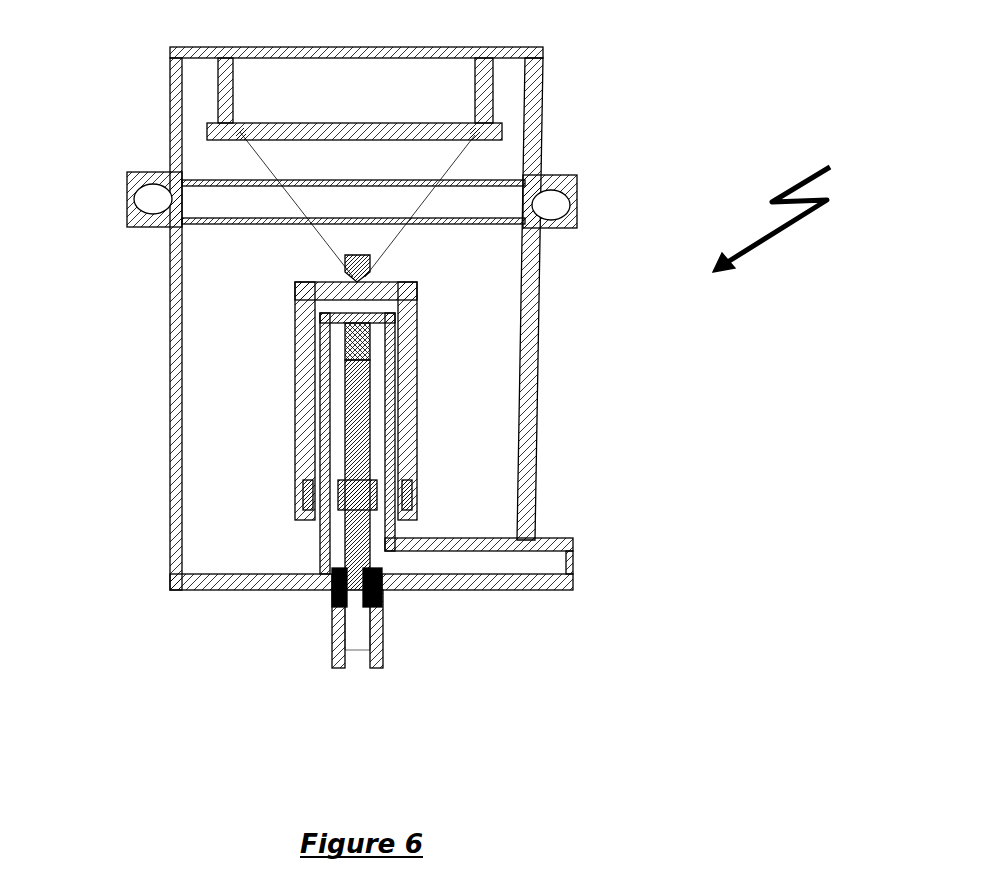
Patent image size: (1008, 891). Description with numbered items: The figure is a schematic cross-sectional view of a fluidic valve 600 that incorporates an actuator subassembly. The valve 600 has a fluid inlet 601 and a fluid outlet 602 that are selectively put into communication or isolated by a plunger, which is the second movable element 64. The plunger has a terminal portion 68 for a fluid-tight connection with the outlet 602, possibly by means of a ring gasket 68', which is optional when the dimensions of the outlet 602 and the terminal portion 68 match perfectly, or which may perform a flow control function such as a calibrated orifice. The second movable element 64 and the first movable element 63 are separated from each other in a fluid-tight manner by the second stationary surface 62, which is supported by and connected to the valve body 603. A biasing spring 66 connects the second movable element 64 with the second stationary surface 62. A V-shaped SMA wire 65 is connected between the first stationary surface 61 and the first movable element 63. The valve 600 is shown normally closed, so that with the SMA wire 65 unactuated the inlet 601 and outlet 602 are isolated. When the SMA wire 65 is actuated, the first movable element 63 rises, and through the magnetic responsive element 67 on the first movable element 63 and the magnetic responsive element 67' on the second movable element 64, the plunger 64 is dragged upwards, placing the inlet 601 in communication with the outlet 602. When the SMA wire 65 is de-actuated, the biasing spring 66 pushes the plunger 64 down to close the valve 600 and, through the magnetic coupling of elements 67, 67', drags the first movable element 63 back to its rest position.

The fluidic valve 600 is at (810, 211).
The fluid inlet 601 is at (570, 563).
The fluid outlet 602 is at (362, 650).
The valve body 603 is at (177, 430).
The first stationary surface 61 is at (282, 128).
The second stationary surface 62 is at (323, 533).
The first movable element 63 is at (297, 418).
The second movable element 64 is at (360, 387).
The SMA wire 65 is at (312, 230).
The biasing spring 66 is at (363, 340).
The magnetic responsive element 67 is at (319, 465).
The magnetic responsive element 67' is at (419, 436).
The terminal portion 68 is at (302, 645).
The ring gasket 68' is at (353, 603).